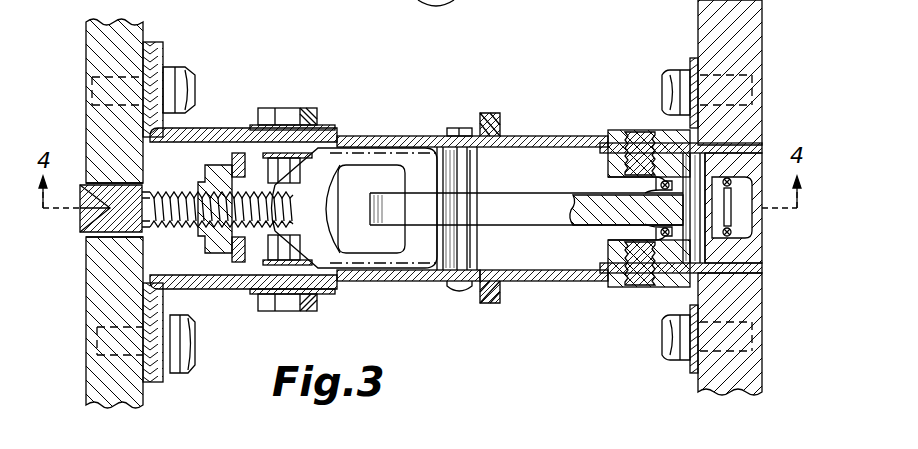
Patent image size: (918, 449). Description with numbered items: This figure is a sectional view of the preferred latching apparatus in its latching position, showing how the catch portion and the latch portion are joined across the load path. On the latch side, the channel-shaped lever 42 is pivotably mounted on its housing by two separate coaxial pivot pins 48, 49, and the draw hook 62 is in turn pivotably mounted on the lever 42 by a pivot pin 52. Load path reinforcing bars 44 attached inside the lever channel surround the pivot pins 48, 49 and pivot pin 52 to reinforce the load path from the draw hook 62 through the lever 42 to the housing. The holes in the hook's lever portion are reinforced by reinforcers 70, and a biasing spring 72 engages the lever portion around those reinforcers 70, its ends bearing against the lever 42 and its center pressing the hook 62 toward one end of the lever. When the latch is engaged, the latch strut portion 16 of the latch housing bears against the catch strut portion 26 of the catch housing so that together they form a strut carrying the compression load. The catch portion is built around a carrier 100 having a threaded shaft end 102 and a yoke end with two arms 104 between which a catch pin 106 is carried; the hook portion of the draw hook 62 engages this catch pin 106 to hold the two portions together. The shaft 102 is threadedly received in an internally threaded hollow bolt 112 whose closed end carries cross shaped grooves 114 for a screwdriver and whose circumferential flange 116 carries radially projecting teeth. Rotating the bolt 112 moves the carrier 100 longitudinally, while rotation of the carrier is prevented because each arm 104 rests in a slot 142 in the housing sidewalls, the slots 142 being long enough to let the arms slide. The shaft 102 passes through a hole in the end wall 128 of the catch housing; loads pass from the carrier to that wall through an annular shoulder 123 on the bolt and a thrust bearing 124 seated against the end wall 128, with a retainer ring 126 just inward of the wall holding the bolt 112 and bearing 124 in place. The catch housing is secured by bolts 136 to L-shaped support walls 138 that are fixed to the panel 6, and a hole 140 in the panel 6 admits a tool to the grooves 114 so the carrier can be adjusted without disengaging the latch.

The panel 6 is at (86, 303).
The latch strut portion 16 is at (532, 282).
The catch strut portion 26 is at (417, 277).
The lever 42 is at (762, 257).
The load path reinforcing bars 44 is at (603, 244).
The pivot pin 48 is at (640, 282).
The pivot pin 49 is at (638, 130).
The pivot pin 52 is at (690, 230).
The draw hook 62 is at (500, 204).
The reinforcers 70 is at (660, 185).
The biasing spring 72 is at (660, 232).
The carrier 100 is at (313, 160).
The threaded shaft end 102 is at (222, 160).
The yoke arms 104 is at (373, 147).
The catch pin 106 is at (417, 160).
The hollow bolt 112 is at (165, 233).
The cross shaped grooves 114 is at (80, 210).
The circumferential flange 116 is at (215, 250).
The annular shoulder 123 is at (243, 262).
The thrust bearing 124 is at (270, 106).
The retainer ring 126 is at (242, 262).
The end wall 128 is at (272, 150).
The bolts 136 is at (315, 110).
The L-shaped support walls 138 is at (203, 165).
The hole 140 is at (86, 183).
The slots 142 is at (447, 137).